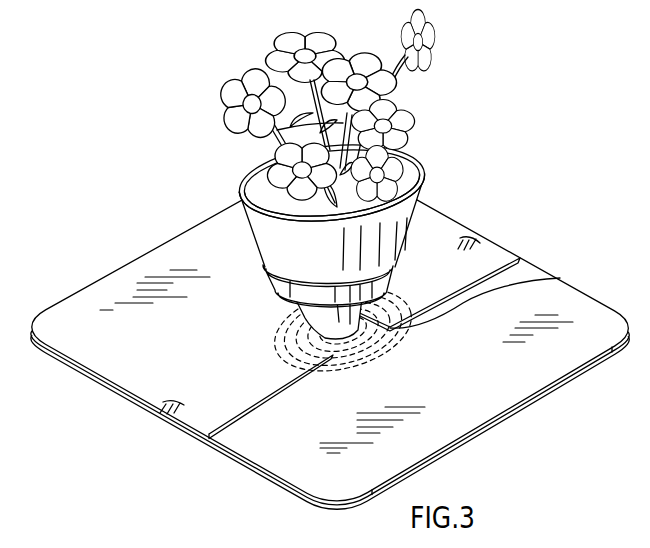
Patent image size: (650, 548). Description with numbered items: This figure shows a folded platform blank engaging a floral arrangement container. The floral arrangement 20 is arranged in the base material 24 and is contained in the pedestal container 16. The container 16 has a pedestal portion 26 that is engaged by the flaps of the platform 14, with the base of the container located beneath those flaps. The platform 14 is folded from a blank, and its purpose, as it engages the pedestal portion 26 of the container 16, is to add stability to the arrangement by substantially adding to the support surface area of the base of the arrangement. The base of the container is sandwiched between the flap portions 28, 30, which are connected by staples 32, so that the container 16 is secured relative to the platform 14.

The platform 14 is at (549, 345).
The container 16 is at (388, 222).
The floral arrangement 20 is at (436, 129).
The base material 24 is at (410, 190).
The pedestal portion 26 is at (550, 280).
The flap portion 28 is at (92, 343).
The flap portion 30 is at (237, 447).
The staples 32 is at (483, 240).